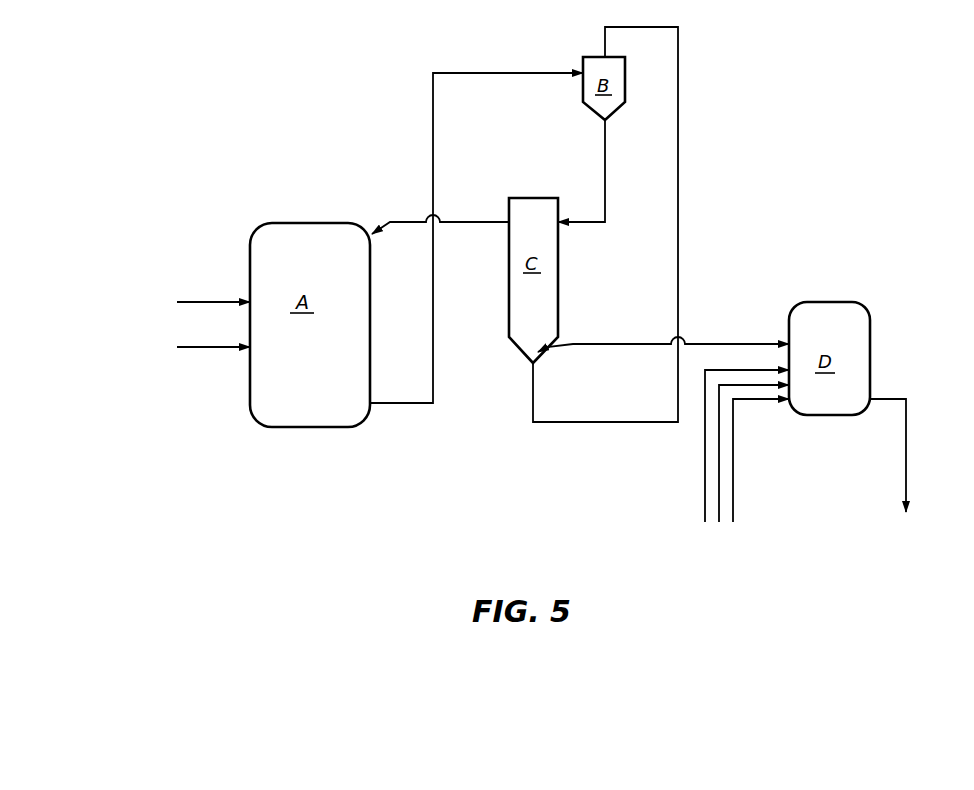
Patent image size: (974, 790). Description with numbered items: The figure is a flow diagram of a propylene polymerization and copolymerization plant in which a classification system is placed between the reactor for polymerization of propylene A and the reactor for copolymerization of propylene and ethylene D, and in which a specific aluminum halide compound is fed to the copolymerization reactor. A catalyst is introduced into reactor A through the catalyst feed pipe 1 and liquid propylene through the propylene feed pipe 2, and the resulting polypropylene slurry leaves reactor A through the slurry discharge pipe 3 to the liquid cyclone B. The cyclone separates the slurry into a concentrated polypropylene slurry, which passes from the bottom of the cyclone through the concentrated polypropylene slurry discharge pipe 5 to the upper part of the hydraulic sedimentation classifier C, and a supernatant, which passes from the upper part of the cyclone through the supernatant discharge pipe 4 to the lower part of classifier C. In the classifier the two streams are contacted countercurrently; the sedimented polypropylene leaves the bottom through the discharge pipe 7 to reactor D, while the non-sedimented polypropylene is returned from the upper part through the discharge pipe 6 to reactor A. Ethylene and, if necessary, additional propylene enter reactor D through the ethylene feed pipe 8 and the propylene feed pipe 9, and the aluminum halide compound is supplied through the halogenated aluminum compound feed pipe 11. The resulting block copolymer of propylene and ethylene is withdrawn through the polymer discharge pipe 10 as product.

The catalyst feed pipe 1 is at (218, 300).
The propylene feed pipe 2 is at (217, 350).
The slurry discharge pipe 3 is at (433, 140).
The supernatant discharge pipe 4 is at (678, 80).
The concentrated polypropylene slurry discharge pipe 5 is at (605, 190).
The discharge pipe of hydraulic sedimentation classifier 6 is at (397, 222).
The discharge pipe of hydraulic sedimentation classifier 7 is at (612, 344).
The ethylene feed pipe 8 is at (705, 473).
The propylene feed pipe 9 is at (719, 470).
The polymer discharge pipe 10 is at (906, 443).
The halogenated aluminum compound feed pipe 11 is at (733, 506).